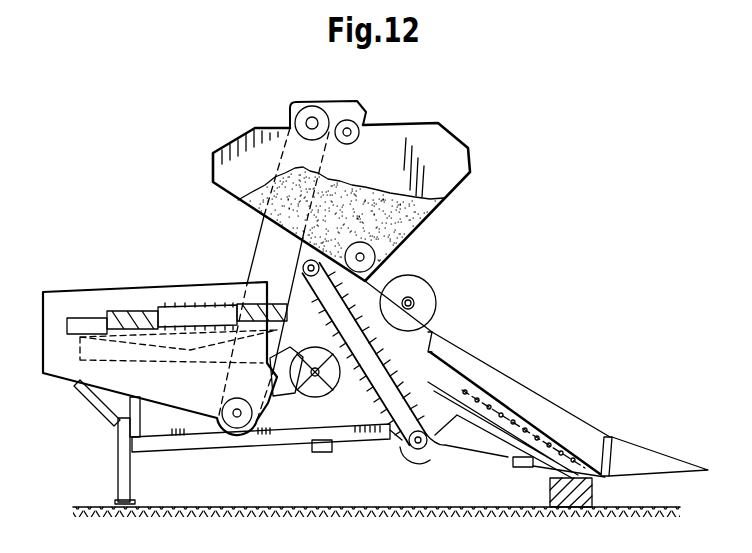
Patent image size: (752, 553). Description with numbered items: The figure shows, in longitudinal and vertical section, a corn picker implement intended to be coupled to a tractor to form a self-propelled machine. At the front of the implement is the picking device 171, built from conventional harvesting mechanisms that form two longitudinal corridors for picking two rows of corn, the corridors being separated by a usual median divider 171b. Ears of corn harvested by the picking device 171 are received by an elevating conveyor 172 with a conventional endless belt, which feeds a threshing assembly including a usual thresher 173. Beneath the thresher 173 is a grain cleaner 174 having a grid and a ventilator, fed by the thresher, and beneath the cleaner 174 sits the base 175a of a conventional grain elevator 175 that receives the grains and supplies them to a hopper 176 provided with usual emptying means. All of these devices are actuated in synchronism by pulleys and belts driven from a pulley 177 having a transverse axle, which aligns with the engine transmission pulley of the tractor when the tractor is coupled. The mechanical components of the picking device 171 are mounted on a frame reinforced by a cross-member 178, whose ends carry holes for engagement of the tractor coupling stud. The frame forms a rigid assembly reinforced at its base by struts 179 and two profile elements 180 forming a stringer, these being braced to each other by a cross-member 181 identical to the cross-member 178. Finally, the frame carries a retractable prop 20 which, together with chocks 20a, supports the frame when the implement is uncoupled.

The retractable prop 20 is at (128, 476).
The chocks 20a is at (565, 486).
The picking device 171 is at (520, 398).
The median divider 171b is at (647, 447).
The elevating conveyor 172 is at (395, 447).
The thresher 173 is at (173, 306).
The grain cleaner 174 is at (165, 360).
The grain elevator 175 is at (259, 255).
The base 175a is at (163, 404).
The hopper 176 is at (452, 155).
The pulley 177 is at (432, 282).
The cross-member 178 is at (517, 467).
The struts 179 is at (98, 406).
The profile elements 180 is at (230, 440).
The cross-member 181 is at (322, 453).